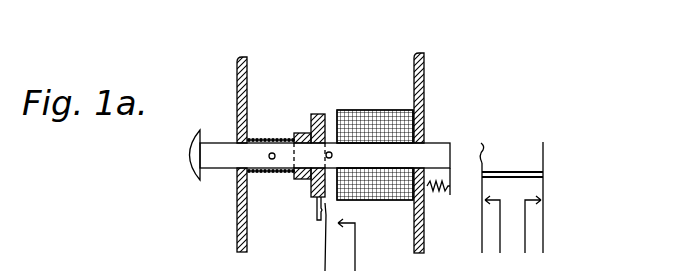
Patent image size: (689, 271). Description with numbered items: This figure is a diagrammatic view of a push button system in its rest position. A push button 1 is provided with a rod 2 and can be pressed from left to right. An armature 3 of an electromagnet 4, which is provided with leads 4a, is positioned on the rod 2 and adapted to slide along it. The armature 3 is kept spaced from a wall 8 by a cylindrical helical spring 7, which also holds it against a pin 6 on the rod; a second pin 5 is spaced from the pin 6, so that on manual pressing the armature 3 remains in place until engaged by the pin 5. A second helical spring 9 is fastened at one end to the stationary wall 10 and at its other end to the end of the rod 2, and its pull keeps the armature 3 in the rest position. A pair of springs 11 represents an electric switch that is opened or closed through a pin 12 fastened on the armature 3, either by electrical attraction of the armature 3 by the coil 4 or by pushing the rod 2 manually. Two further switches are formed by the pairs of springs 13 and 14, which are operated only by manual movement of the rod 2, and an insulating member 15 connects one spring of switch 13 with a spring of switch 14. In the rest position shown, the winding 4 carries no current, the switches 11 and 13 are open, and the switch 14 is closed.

The push button 1 is at (190, 150).
The rod 2 is at (220, 147).
The armature 3 is at (318, 113).
The electromagnet 4 is at (392, 110).
The leads 4a is at (345, 110).
The pin 5 is at (269, 159).
The pin 6 is at (326, 158).
The cylindrical helical spring 7 is at (273, 137).
The wall 8 is at (237, 62).
The second helical spring 9 is at (436, 193).
The stationary wall 10 is at (425, 70).
The pair of springs 11 is at (324, 235).
The pin 12 is at (315, 212).
The pair of springs 13 is at (484, 200).
The pair of springs 14 is at (546, 200).
The insulating member 15 is at (500, 176).